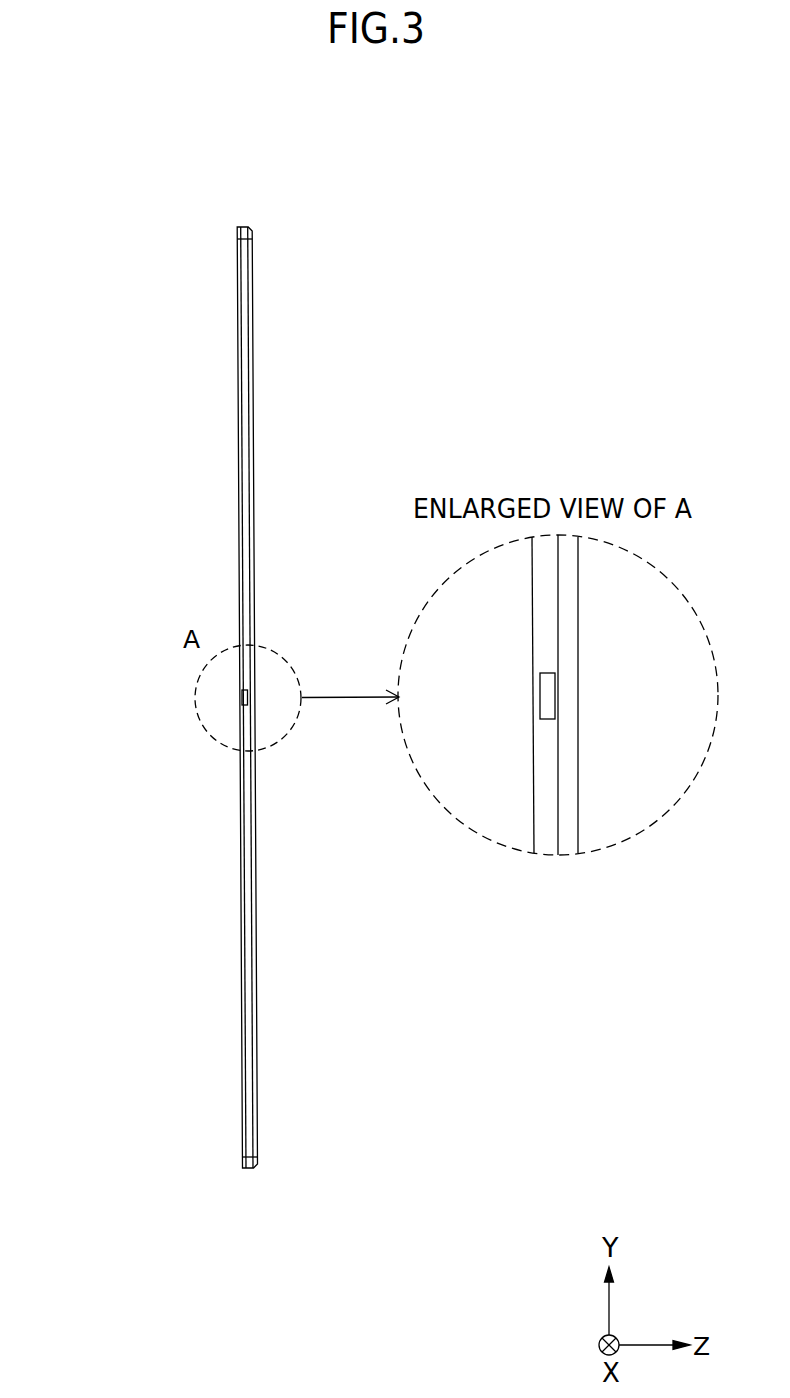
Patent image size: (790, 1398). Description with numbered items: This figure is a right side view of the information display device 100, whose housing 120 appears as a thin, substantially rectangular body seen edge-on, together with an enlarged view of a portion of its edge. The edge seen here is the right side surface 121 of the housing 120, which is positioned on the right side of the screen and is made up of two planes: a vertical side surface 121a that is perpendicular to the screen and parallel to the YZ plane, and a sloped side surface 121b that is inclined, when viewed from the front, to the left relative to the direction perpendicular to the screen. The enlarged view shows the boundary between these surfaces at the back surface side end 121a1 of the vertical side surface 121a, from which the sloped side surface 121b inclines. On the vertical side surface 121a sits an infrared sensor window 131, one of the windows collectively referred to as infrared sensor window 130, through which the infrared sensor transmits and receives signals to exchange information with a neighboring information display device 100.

The information display device 100 is at (72, 138).
The housing 120 is at (245, 362).
The right side surface 121 is at (245, 450).
The vertical side surface 121a is at (245, 518).
The back surface side end of the vertical side surface 121a1 is at (560, 775).
The sloped side surface 121b is at (255, 567).
The infrared sensor window 131 is at (546, 695).
The infrared sensor window 130 is at (398, 696).